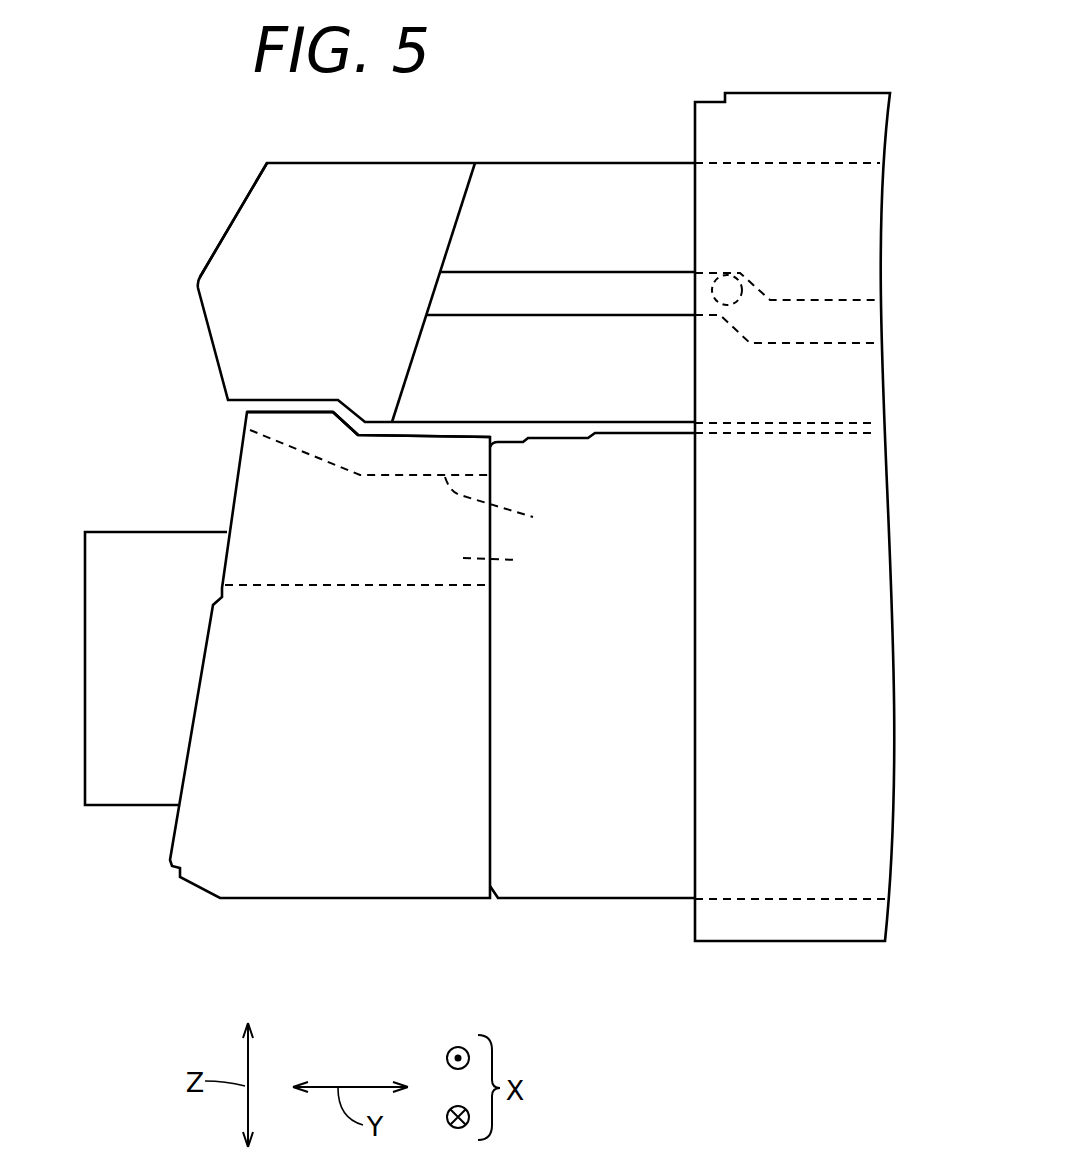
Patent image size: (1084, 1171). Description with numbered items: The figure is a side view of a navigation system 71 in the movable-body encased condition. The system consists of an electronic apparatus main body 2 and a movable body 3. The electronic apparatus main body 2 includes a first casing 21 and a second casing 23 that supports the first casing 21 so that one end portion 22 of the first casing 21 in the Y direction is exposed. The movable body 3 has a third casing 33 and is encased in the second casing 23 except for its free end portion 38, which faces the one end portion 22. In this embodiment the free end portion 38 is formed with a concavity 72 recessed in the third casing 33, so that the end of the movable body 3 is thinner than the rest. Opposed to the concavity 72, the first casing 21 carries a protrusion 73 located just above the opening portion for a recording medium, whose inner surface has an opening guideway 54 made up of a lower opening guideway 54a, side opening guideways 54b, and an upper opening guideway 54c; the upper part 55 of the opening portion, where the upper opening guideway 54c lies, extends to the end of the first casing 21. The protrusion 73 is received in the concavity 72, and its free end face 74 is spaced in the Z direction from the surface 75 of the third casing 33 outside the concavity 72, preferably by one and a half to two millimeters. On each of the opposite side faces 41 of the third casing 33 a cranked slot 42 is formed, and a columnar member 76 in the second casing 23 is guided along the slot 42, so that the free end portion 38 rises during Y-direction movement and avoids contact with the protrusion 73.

The electronic apparatus main body 2 is at (358, 885).
The movable body 3 is at (352, 178).
The first casing 21 is at (545, 888).
The one end portion 22 is at (635, 882).
The second casing 23 is at (770, 920).
The third casing 33 is at (238, 251).
The free end portion 38 is at (417, 175).
The opposite side faces 41 is at (448, 292).
The slot 42 is at (547, 311).
The opening guideway 54 is at (287, 570).
The lower opening guideway 54a is at (328, 585).
The side opening guideway 54b is at (522, 563).
The upper opening guideway 54c is at (516, 505).
The upper part of the opening portion 55 is at (475, 460).
The navigation system 71 is at (523, 80).
The concavity 72 is at (245, 406).
The protrusion 73 is at (292, 420).
The free end face 74 is at (282, 410).
The surface 75 is at (410, 423).
The columnar member 76 is at (752, 283).